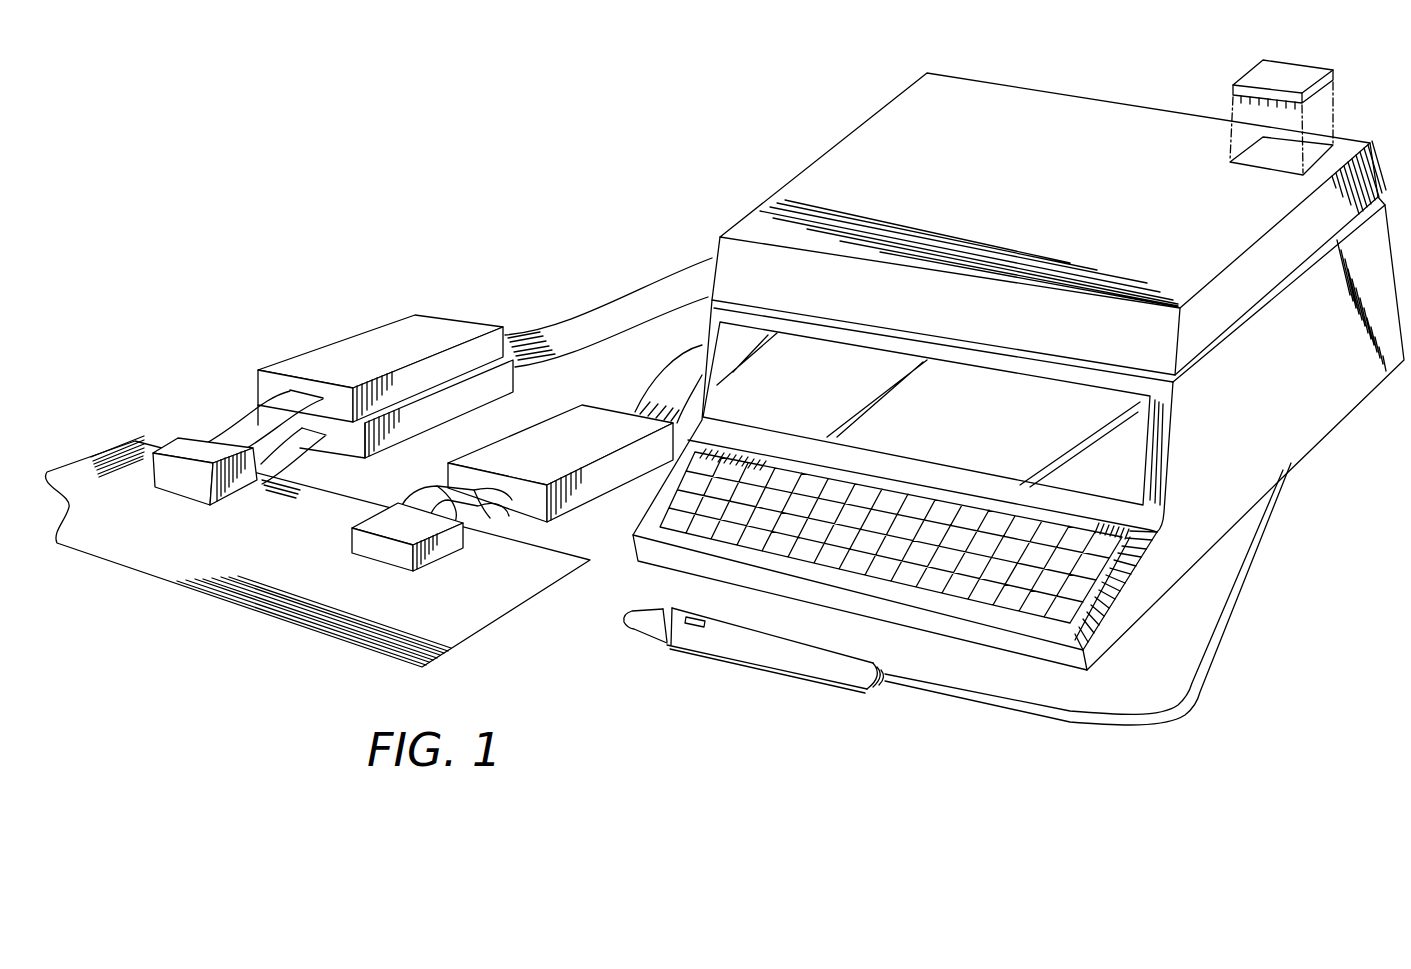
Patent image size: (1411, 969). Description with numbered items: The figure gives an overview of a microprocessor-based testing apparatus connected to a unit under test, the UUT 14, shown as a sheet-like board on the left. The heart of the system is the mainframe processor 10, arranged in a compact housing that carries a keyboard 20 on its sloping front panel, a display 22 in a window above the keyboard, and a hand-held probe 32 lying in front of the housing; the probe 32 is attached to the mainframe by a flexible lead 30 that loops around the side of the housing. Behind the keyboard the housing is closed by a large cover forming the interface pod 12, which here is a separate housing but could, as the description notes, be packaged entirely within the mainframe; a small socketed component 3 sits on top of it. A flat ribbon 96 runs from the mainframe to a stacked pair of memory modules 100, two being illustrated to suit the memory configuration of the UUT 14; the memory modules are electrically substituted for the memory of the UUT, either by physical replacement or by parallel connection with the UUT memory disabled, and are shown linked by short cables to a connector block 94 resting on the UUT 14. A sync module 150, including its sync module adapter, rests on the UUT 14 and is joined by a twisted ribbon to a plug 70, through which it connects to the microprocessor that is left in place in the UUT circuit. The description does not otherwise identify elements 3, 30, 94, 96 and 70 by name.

The mainframe processor 10 is at (1292, 411).
The interface pod 12 is at (1188, 216).
The memory cartridge / IC chip 3 is at (1338, 74).
The display 22 is at (1128, 457).
The keyboard 20 is at (1098, 561).
The probe 32 is at (738, 665).
The pen cable 30 is at (987, 703).
The ribbon cable 96 is at (663, 391).
The memory module 100 is at (305, 353).
The connector module 94 is at (219, 432).
The sync module 150 is at (549, 423).
The connector 70 is at (444, 547).
The UUT 14 is at (272, 576).